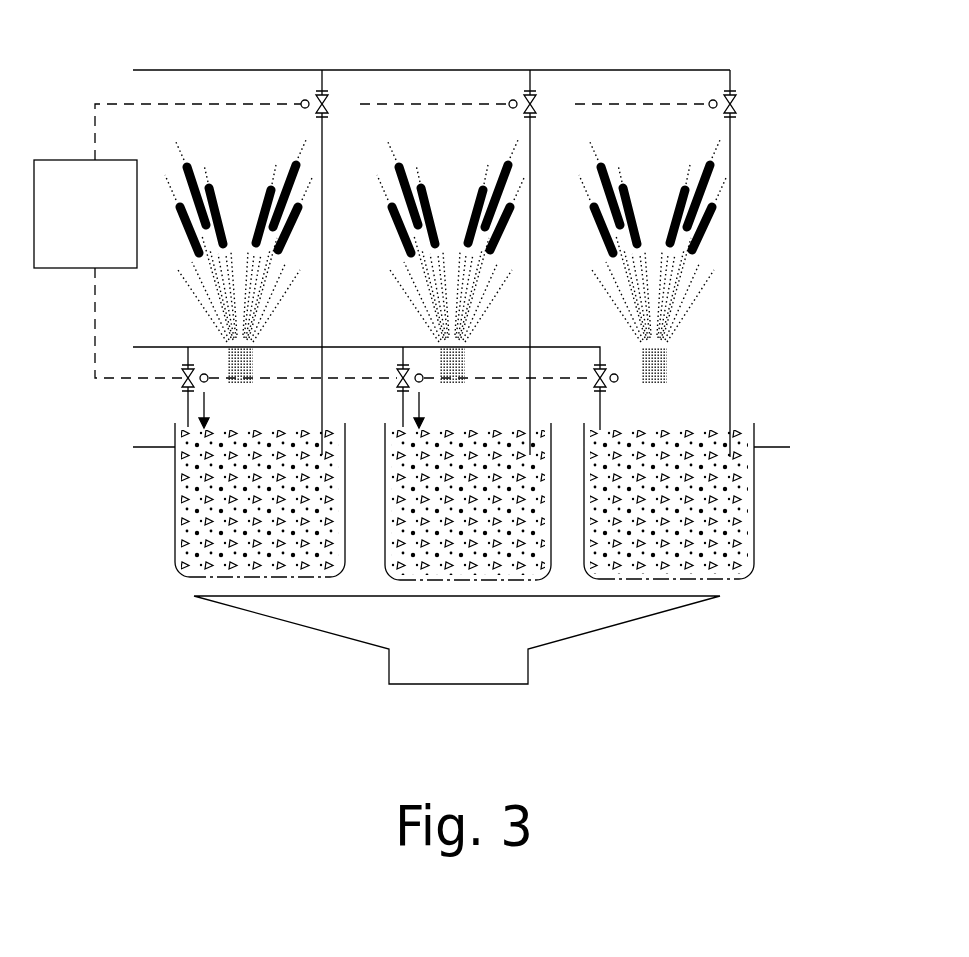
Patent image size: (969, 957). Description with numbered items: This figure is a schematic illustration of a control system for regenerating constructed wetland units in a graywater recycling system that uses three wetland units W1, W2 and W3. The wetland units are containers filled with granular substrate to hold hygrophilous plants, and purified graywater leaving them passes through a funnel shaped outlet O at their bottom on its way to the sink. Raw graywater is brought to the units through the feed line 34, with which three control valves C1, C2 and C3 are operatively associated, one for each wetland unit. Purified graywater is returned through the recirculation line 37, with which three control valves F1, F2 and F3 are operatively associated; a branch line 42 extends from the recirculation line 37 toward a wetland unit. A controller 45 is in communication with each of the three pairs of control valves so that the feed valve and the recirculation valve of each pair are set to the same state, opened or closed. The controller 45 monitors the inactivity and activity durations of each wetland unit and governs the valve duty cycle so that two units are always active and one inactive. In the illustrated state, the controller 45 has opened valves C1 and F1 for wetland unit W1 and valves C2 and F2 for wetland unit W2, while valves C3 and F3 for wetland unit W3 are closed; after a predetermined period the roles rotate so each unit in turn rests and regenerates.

The recirculation line 37 is at (240, 70).
The line 42 is at (732, 322).
The controller 45 is at (60, 160).
The feed line 34 is at (154, 347).
The control valve F1 is at (332, 262).
The control valve F2 is at (540, 262).
The control valve F3 is at (741, 110).
The control valve C1 is at (178, 387).
The control valve C2 is at (396, 387).
The control valve C3 is at (591, 397).
The wetland unit W1 is at (237, 500).
The wetland unit W2 is at (450, 510).
The wetland unit W3 is at (698, 501).
The outlet O is at (457, 640).